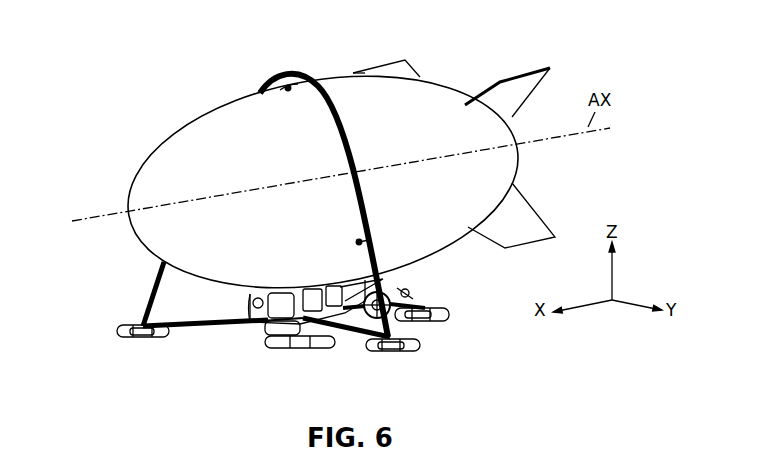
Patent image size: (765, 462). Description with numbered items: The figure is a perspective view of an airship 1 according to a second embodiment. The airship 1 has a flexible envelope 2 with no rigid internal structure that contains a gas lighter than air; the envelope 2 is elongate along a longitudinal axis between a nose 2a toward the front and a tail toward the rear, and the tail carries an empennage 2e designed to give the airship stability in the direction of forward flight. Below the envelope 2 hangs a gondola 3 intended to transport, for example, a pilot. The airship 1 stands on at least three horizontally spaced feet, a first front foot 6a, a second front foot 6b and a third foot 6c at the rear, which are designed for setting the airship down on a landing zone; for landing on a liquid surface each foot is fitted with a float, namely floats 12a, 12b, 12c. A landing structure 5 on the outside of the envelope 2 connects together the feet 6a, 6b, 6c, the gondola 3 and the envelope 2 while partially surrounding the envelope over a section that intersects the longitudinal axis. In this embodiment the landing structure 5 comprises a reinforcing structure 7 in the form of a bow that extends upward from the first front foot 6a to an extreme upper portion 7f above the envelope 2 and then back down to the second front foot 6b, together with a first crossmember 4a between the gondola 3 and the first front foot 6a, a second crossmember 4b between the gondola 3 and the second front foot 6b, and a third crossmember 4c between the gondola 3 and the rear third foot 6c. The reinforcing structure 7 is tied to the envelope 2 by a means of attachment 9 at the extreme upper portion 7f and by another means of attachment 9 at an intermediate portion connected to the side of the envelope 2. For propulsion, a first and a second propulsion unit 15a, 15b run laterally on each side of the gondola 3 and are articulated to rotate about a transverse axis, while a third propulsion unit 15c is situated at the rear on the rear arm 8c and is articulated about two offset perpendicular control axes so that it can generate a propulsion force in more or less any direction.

The airship 1 is at (132, 78).
The flexible envelope 2 is at (231, 109).
The nose 2a is at (165, 158).
The empennage 2e is at (518, 83).
The gondola 3 is at (278, 331).
The first crossmember 4a is at (307, 323).
The second crossmember 4b is at (207, 327).
The third crossmember 4c is at (386, 296).
The landing structure 5 is at (185, 368).
The first front foot 6a is at (395, 351).
The second front foot 6b is at (143, 338).
The third foot 6c is at (437, 319).
The reinforcing structure 7 is at (343, 129).
The extreme upper portion 7f is at (296, 80).
The rear arm 8c is at (412, 300).
The means of attachment 9 is at (288, 89).
The float 12a is at (408, 351).
The float 12b is at (122, 337).
The float 12c is at (444, 314).
The first propulsion unit 15a is at (360, 332).
The second propulsion unit 15b is at (255, 330).
The third propulsion unit 15c is at (410, 285).